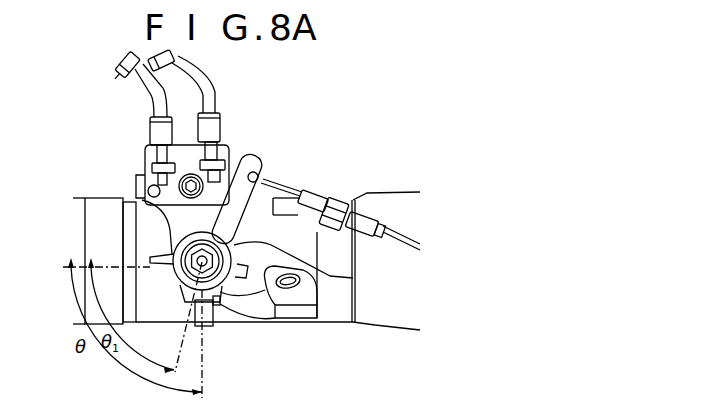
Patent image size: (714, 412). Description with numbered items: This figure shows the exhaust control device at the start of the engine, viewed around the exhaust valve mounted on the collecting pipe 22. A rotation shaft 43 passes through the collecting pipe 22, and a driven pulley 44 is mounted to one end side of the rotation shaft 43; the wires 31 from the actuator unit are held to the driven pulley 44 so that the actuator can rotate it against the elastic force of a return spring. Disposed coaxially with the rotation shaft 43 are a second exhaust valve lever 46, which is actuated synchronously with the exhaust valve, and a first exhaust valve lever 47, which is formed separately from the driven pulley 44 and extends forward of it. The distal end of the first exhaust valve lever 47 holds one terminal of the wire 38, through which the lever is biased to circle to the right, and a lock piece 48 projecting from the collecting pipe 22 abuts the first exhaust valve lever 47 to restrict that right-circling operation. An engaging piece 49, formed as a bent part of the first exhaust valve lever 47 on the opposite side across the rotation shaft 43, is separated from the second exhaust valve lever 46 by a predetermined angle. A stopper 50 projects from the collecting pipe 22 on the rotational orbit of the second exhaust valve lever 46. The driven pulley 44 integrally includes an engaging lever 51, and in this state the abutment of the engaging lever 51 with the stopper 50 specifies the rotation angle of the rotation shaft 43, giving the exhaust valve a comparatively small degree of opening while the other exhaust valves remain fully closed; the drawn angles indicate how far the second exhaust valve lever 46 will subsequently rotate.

The collecting pipe 22 is at (370, 193).
The wires 31 is at (120, 65).
The wire 38 is at (288, 192).
The rotation shaft 43 is at (345, 278).
The driven pulley 44 is at (162, 207).
The second exhaust valve lever 46 is at (172, 262).
The first exhaust valve lever 47 is at (263, 158).
The lock piece 48 is at (265, 190).
The engaging piece 49 is at (215, 305).
The stopper 50 is at (211, 326).
The engaging lever 51 is at (277, 296).